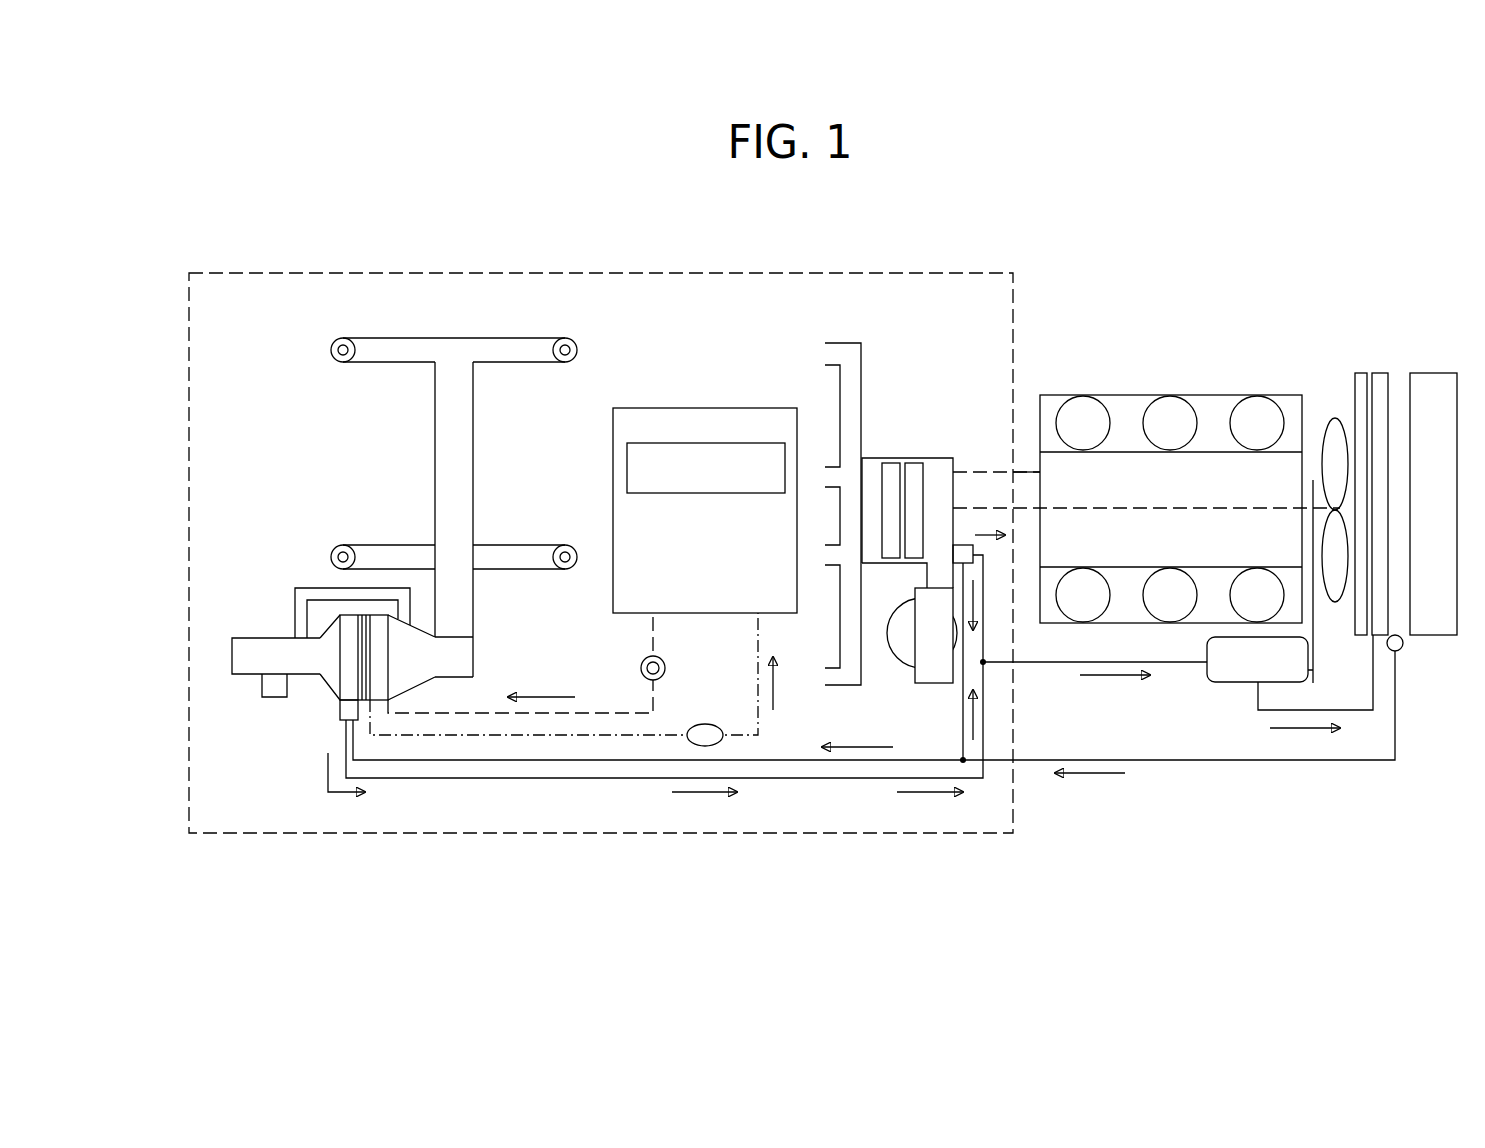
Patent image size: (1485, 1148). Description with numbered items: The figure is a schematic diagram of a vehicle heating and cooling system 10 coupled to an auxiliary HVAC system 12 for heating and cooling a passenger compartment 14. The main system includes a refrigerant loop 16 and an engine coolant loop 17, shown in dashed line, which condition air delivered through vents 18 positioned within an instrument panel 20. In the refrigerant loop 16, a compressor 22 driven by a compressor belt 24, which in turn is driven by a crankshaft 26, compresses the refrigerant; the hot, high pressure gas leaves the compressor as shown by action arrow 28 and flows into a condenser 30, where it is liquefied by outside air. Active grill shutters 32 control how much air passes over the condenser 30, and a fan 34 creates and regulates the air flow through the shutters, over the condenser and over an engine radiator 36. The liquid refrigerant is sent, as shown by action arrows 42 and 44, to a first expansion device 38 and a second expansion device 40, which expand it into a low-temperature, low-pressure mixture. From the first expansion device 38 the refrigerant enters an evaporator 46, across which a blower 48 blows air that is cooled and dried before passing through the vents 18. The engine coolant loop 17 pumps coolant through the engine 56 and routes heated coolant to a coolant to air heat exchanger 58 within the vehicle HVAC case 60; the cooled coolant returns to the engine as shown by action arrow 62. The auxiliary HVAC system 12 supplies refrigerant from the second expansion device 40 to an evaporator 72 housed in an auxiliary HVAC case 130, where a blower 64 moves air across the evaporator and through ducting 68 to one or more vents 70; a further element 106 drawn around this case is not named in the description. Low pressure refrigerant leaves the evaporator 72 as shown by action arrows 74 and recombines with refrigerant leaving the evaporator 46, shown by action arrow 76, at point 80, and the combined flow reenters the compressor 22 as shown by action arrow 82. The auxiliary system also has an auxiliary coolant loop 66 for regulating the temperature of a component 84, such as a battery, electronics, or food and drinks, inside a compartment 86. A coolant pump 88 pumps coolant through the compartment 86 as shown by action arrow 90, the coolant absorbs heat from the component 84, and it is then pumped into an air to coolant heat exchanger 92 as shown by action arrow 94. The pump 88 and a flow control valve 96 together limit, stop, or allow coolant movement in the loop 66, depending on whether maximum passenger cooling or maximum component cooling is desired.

The vehicle heating and cooling system 10 is at (1132, 370).
The auxiliary HVAC system 12 is at (410, 780).
The passenger compartment 14 is at (188, 445).
The refrigerant loop 16 is at (1345, 762).
The engine coolant loop 17 is at (1023, 472).
The vents 18 is at (840, 405).
The instrument panel 20 is at (862, 360).
The compressor 22 is at (1220, 682).
The compressor belt 24 is at (1316, 612).
The crankshaft 26 is at (1306, 508).
The action arrow 28 is at (1300, 730).
The condenser 30 is at (1380, 373).
The active grill shutters 32 is at (1437, 373).
The fan 34 is at (1333, 418).
The engine radiator 36 is at (1360, 373).
The first (cooling) expansion device 38 is at (962, 545).
The second (cooling) expansion device 40 is at (340, 713).
The action arrow 42 is at (975, 718).
The action arrow 44 is at (862, 750).
The evaporator 46 is at (915, 463).
The blower 48 is at (912, 657).
The engine 56 is at (1215, 395).
The coolant to air heat exchanger 58 is at (893, 463).
The vehicle HVAC case 60 is at (940, 458).
The action arrow 62 is at (988, 533).
The blower 64 is at (262, 686).
The auxiliary coolant loop 66 is at (577, 735).
The ducting 68 is at (435, 440).
The vents 70 is at (576, 338).
The evaporator 72 is at (338, 683).
The action arrows 74 is at (340, 792).
The action arrow 76 is at (975, 605).
The point 80 is at (983, 662).
The action arrow 82 is at (1108, 675).
The component 84 is at (627, 472).
The compartment 86 is at (690, 408).
The coolant pump 88 is at (708, 724).
The action arrow 90 is at (773, 683).
The air to coolant heat exchanger 92 is at (378, 615).
The action arrow 94 is at (540, 696).
The flow control valve 96 is at (641, 666).
The motor housing jacket 106 is at (295, 610).
The auxiliary HVAC case 130 is at (232, 656).